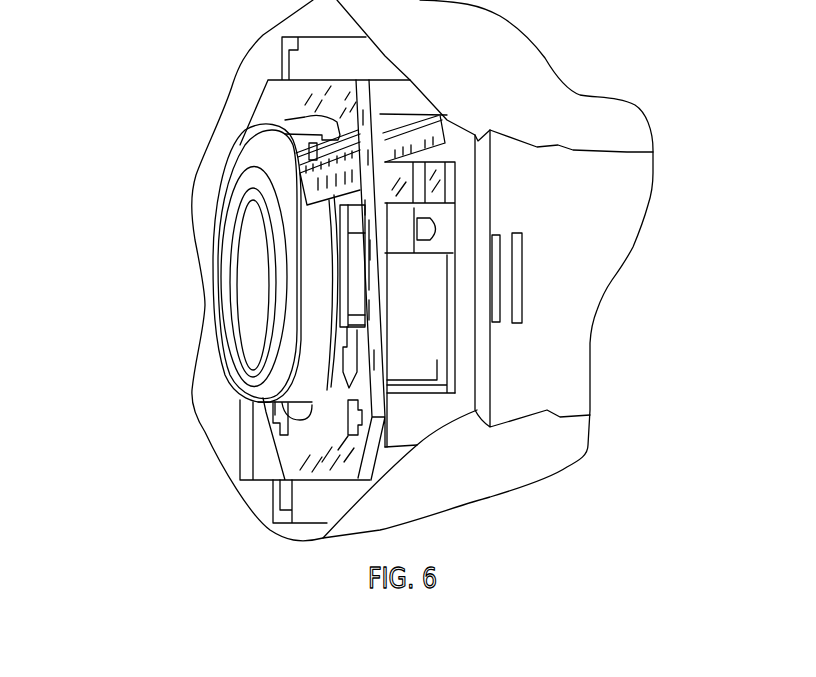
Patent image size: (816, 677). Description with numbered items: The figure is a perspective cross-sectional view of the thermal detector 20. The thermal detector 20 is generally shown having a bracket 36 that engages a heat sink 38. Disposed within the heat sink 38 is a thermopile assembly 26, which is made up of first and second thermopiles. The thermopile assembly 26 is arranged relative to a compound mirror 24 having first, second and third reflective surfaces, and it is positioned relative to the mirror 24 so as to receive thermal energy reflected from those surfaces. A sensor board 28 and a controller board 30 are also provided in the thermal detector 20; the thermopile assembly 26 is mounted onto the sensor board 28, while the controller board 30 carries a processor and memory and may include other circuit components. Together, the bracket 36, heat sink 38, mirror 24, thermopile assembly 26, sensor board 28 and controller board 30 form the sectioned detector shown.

The thermal detector 20 is at (150, 252).
The compound mirror 24 is at (385, 175).
The thermopile assembly 26 is at (313, 187).
The sensor board 28 is at (417, 120).
The controller board 30 is at (413, 295).
The bracket 36 is at (292, 452).
The heat sink 38 is at (310, 162).